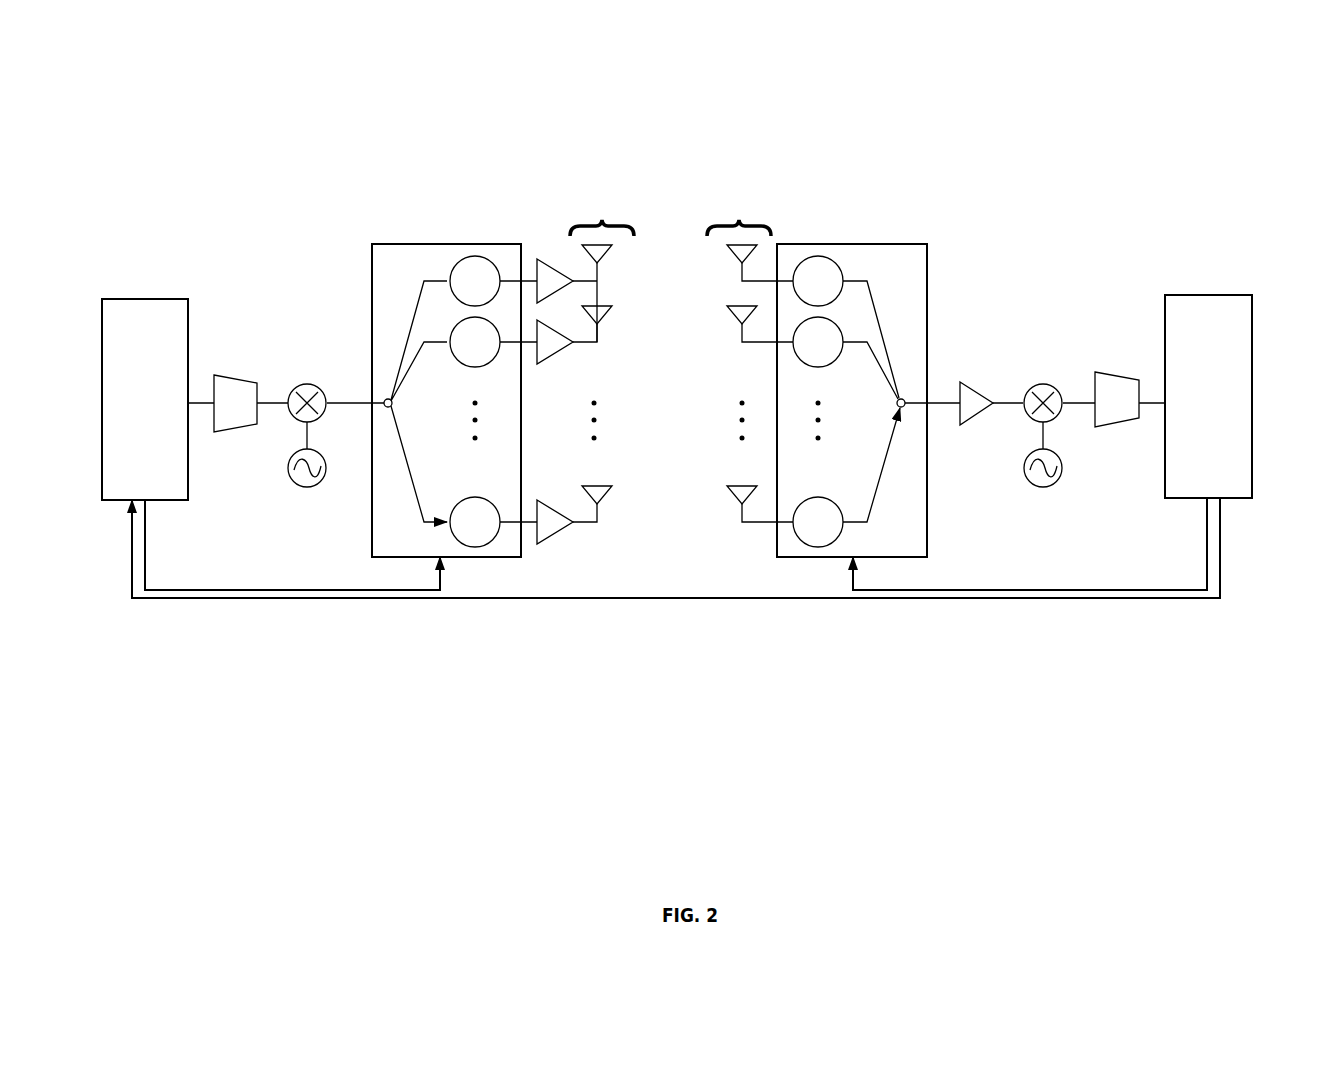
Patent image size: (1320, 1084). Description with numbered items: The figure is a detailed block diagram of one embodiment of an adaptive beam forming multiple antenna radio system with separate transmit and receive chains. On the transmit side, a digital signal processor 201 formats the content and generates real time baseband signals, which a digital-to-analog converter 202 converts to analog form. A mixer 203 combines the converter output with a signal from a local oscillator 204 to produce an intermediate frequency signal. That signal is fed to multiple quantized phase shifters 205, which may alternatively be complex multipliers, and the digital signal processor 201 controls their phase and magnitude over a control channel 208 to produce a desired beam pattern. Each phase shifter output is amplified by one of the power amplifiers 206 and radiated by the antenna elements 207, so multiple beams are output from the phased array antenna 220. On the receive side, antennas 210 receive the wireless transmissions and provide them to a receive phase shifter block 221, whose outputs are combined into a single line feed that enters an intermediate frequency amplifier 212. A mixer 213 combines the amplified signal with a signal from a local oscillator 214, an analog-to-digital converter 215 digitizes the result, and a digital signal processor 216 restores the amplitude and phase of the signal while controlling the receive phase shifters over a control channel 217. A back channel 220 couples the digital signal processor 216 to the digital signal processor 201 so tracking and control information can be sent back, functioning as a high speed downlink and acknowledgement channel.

The digital signal processor 201 is at (145, 399).
The digital-to-analog converter 202 is at (233, 419).
The mixer 203 is at (300, 378).
The local oscillator 204 is at (290, 485).
The phase shifters 205 is at (767, 568).
The power amplifiers 206 is at (545, 243).
The antenna elements 207 is at (673, 122).
The control channel 208 is at (317, 593).
The antennas 210 is at (673, 122).
The intermediate frequency amplifier 212 is at (972, 372).
The mixer 213 is at (1042, 378).
The local oscillator 214 is at (1030, 485).
The analog-to-digital converter 215 is at (1113, 416).
The digital signal processor 216 is at (1208, 396).
The control channel 217 is at (1087, 592).
The phased array antenna 220 is at (925, 810).
The Receive phase shifter block 221 is at (852, 400).